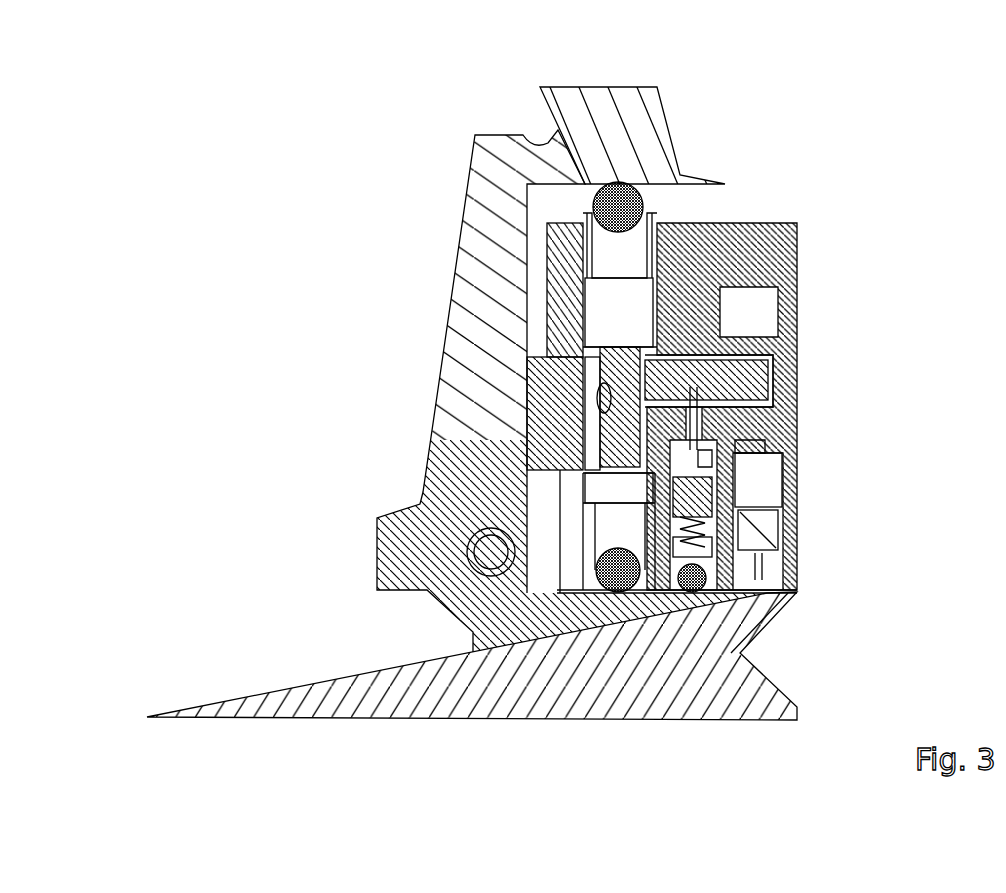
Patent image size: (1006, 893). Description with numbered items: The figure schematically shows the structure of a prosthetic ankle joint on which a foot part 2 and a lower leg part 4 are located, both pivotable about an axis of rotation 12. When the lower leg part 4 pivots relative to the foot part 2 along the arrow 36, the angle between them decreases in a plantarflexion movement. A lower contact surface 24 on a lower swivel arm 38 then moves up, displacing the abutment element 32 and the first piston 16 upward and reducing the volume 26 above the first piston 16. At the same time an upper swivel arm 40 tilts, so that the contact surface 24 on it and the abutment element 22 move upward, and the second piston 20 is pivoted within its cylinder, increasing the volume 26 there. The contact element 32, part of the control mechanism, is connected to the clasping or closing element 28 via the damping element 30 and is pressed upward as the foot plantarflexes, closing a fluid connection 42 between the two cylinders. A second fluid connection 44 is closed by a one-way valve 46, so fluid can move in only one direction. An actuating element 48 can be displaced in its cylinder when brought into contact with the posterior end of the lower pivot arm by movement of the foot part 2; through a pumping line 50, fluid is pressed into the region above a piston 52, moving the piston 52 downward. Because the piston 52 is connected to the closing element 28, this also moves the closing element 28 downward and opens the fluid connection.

The foot part 2 is at (232, 645).
The lower leg part 4 is at (656, 138).
The axis of rotation 12 is at (483, 552).
The first piston 16 is at (473, 630).
The second piston 20 is at (730, 223).
The abutment element 22 is at (633, 207).
The contact surface 24 is at (580, 184).
The volume 26 is at (635, 312).
The closing element 28 is at (763, 457).
The damping element 30 is at (768, 620).
The contact element 32 is at (557, 700).
The arrow 36 is at (234, 256).
The lower swivel arm 38 is at (668, 595).
The upper swivel arm 40 is at (538, 142).
The fluid connection 42 is at (773, 373).
The second fluid connection 44 is at (585, 388).
The one-way valve 46 is at (592, 380).
The actuating element 48 is at (763, 522).
The pumping line 50 is at (763, 430).
The piston 52 is at (790, 570).